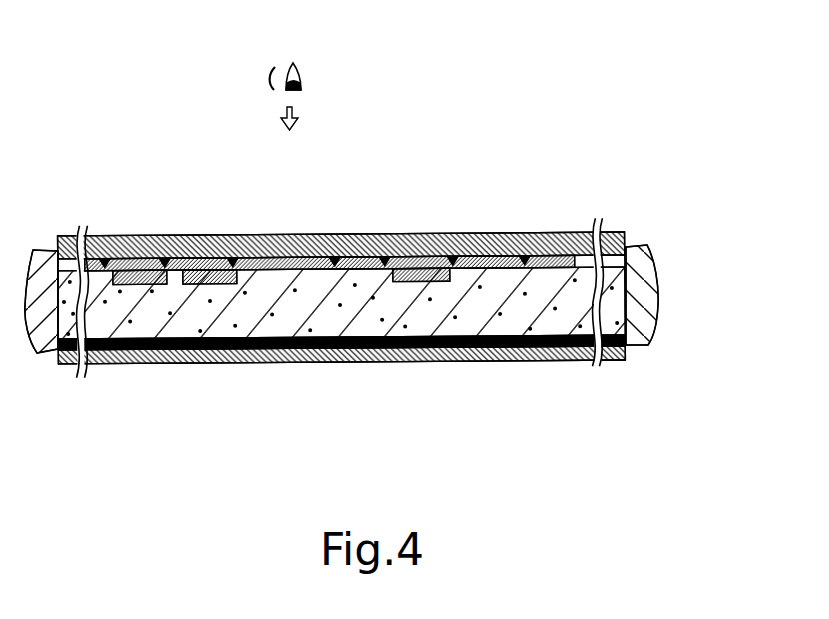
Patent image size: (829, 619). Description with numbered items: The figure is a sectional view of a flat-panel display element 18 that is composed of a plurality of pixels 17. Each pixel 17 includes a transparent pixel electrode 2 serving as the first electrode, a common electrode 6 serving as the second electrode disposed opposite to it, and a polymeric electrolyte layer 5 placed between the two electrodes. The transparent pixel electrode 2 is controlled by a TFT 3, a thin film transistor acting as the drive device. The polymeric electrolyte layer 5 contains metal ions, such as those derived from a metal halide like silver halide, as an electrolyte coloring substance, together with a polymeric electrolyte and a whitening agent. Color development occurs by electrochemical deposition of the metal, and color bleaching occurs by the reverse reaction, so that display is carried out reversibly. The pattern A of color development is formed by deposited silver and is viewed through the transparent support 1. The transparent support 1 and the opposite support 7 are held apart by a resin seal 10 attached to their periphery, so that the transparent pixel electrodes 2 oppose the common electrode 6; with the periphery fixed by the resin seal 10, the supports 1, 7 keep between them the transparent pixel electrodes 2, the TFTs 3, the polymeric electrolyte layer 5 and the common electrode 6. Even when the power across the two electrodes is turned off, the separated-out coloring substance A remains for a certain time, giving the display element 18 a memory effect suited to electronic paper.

The transparent support 1 is at (572, 232).
The transparent pixel electrode 2 is at (403, 233).
The TFT 3 is at (222, 236).
The polymeric electrolyte layer 5 is at (470, 363).
The common electrode 6 is at (210, 363).
The support 7 is at (318, 363).
The resin seal 10 is at (48, 350).
The pixel 17 is at (510, 232).
The display element 18 is at (633, 97).
The pattern of color development A is at (181, 272).